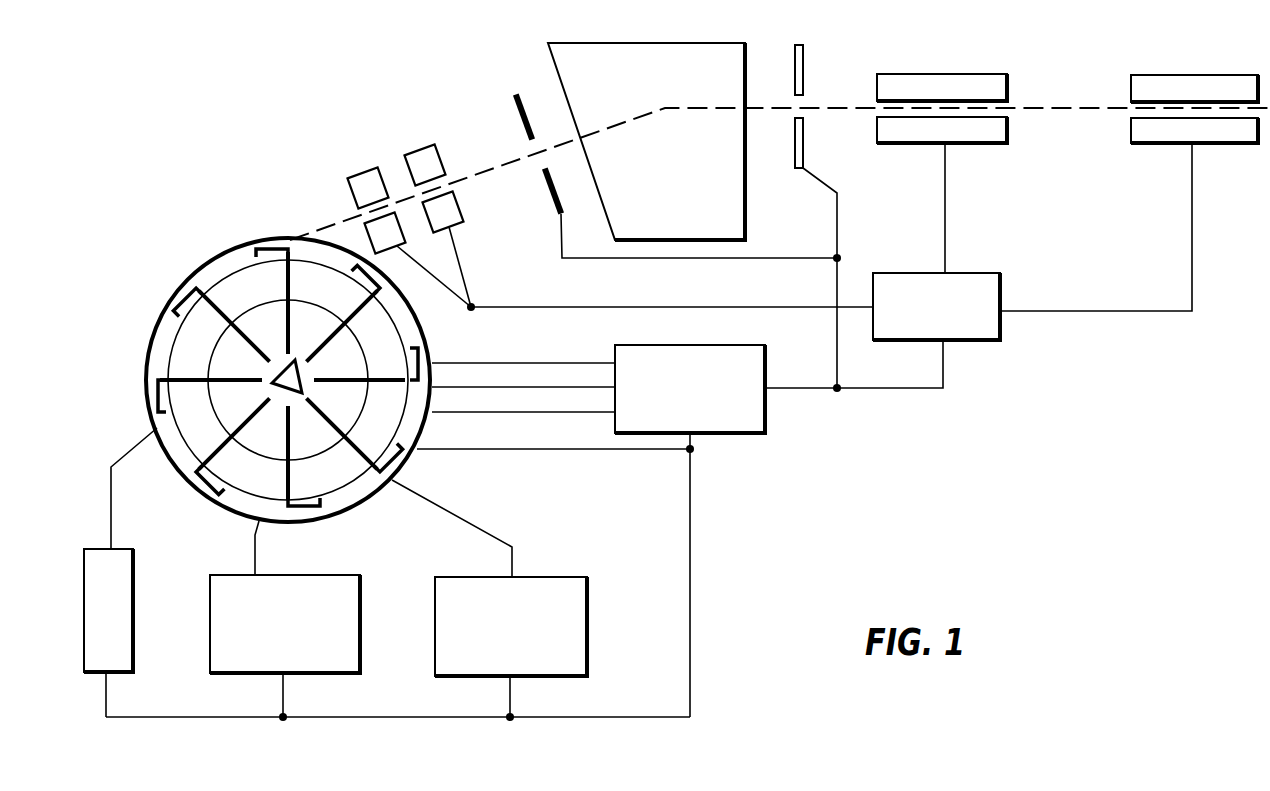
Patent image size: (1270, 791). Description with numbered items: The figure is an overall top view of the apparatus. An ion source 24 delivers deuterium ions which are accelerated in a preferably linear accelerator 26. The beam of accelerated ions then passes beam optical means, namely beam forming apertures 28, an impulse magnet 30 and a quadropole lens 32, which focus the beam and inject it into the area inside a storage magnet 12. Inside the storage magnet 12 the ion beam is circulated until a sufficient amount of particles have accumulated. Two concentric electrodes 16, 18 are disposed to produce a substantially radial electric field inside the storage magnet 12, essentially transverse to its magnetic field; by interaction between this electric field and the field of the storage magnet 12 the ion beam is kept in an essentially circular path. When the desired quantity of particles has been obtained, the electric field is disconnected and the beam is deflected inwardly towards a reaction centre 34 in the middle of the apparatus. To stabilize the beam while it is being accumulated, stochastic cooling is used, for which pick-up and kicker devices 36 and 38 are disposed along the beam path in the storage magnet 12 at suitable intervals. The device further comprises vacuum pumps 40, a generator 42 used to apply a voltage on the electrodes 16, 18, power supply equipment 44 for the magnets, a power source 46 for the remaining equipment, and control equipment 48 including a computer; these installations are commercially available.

The storage magnet 12 is at (232, 260).
The concentric electrode 16 is at (177, 325).
The concentric electrode 18 is at (148, 343).
The ion source 24 is at (1147, 138).
The linear accelerator 26 is at (972, 133).
The beam forming apertures 28 is at (518, 112).
The impulse magnet 30 is at (547, 53).
The quadropole lens 32 is at (420, 152).
The reaction centre 34 is at (282, 382).
The pick-up device 36 is at (183, 288).
The kicker device 38 is at (155, 390).
The vacuum pumps 40 is at (553, 583).
The generator 42 is at (120, 578).
The power supply equipment 44 is at (347, 595).
The power source 46 is at (965, 330).
The control equipment 48 is at (748, 412).